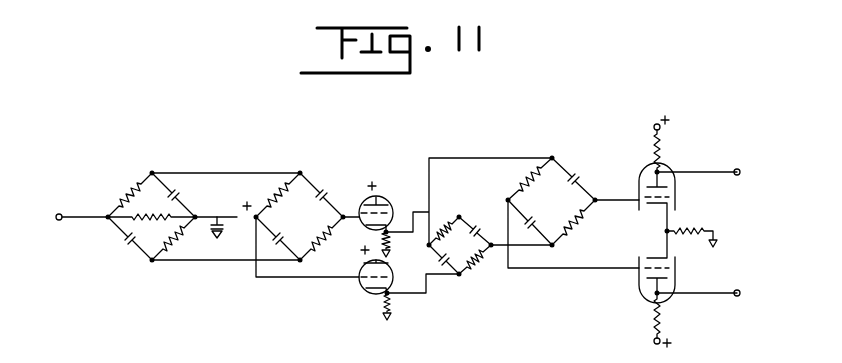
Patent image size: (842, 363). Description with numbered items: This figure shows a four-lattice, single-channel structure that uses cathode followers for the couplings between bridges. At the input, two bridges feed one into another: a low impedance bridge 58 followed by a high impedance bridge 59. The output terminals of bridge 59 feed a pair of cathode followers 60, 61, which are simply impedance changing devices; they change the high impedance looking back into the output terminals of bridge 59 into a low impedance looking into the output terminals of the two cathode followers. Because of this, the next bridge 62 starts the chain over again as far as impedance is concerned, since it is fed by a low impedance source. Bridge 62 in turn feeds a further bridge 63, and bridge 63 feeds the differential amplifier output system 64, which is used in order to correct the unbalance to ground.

The low impedance bridge 58 is at (148, 197).
The high impedance bridge 59 is at (300, 193).
The cathode follower 60 is at (385, 200).
The cathode follower 61 is at (388, 294).
The bridge 62 is at (466, 268).
The bridge 63 is at (583, 188).
The differential amplifier output system 64 is at (662, 170).